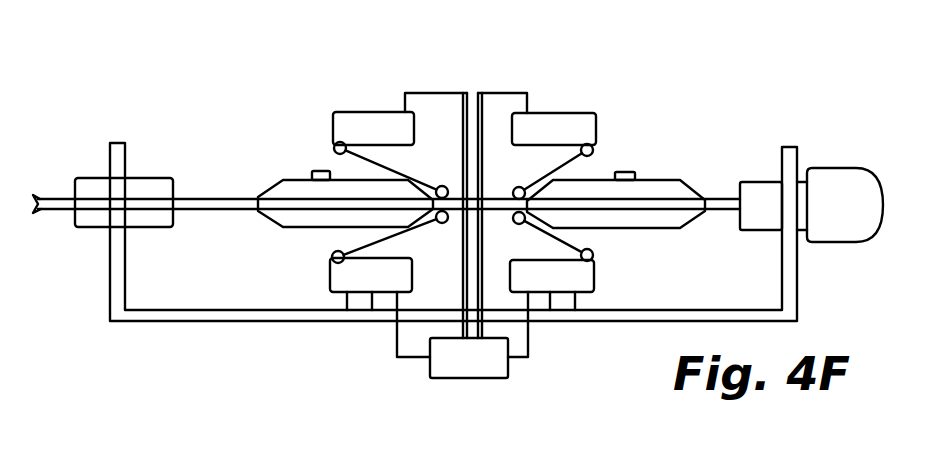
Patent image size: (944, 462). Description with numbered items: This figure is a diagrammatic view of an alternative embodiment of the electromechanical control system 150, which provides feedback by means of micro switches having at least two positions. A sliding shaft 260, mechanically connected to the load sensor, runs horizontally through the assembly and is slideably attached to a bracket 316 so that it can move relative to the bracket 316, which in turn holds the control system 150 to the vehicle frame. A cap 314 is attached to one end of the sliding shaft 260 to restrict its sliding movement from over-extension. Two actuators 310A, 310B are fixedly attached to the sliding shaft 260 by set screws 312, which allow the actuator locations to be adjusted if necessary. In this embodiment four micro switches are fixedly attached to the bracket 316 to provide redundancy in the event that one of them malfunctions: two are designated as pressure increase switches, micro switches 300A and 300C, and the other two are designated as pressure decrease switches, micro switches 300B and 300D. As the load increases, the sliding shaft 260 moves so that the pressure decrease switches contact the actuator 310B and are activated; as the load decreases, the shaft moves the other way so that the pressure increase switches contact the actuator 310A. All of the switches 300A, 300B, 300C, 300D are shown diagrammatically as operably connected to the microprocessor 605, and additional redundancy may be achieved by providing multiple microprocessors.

The control system 150 is at (156, 124).
The sliding shaft 260 is at (197, 212).
The pressure increase switch 300A is at (330, 281).
The pressure decrease switch 300B is at (596, 280).
The pressure increase switch 300C is at (333, 120).
The pressure decrease switch 300D is at (598, 118).
The actuator 310A is at (283, 181).
The actuator 310B is at (683, 181).
The set screw 312 is at (318, 171).
The cap 314 is at (823, 170).
The bracket 316 is at (797, 263).
The microprocessor 605 is at (509, 366).